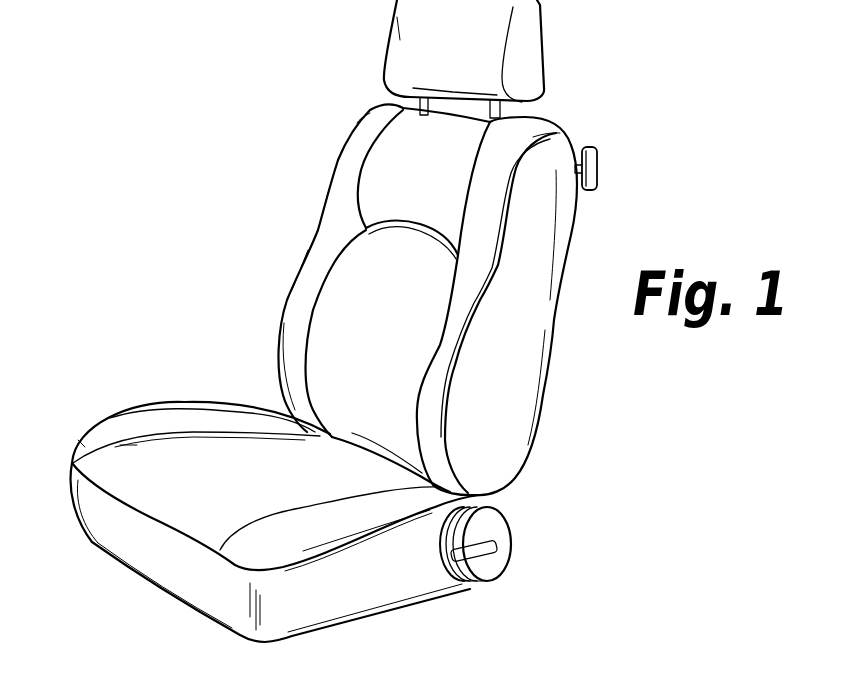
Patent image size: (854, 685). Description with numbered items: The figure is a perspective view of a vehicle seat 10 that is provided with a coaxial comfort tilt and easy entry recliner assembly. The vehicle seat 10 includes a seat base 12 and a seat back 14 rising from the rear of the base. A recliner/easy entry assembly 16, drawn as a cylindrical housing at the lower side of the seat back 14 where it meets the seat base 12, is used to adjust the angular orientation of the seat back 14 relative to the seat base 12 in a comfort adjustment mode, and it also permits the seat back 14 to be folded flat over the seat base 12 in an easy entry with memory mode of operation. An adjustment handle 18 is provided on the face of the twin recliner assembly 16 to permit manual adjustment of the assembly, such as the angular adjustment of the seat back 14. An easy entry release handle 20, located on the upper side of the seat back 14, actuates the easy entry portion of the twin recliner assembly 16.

The vehicle seat 10 is at (385, 321).
The seat base 12 is at (203, 478).
The seat back 14 is at (510, 407).
The recliner/easy entry assembly 16 is at (521, 552).
The adjustment handle 18 is at (470, 557).
The easy entry release handle 20 is at (597, 167).